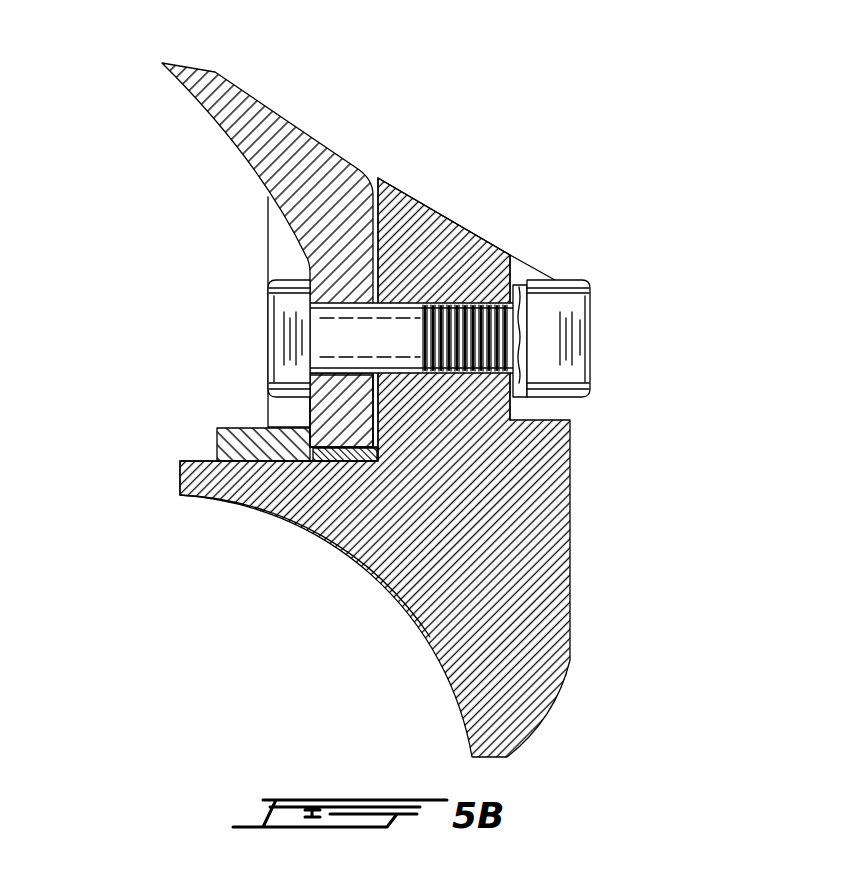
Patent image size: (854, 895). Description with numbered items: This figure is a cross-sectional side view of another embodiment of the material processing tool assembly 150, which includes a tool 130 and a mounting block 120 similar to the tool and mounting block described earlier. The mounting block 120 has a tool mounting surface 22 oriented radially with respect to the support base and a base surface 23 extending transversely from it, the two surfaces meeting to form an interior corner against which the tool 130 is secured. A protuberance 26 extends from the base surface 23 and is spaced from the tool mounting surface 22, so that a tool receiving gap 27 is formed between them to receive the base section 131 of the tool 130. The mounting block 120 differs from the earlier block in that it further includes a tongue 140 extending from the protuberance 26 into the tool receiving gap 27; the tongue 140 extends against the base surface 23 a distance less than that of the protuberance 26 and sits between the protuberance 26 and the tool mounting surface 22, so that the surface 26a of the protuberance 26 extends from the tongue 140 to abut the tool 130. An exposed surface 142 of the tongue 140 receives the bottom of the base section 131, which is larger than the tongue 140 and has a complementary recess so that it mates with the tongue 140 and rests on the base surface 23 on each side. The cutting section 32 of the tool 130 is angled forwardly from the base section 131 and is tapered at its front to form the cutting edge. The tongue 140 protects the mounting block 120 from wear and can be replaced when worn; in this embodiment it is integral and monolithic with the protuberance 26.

The mounting block 120 is at (381, 446).
The tool mounting surface 22 is at (380, 238).
The base surface 23 is at (190, 461).
The tool 130 is at (364, 315).
The cutting section 32 is at (250, 123).
The tongue 140 is at (362, 455).
The base section 131 is at (352, 412).
The exposed surface 142 is at (337, 447).
The tool receiving gap 27 is at (333, 466).
The protuberance 26 is at (237, 428).
The surface of the protuberance 26a is at (307, 463).
The material processing tool assembly 150 is at (570, 238).